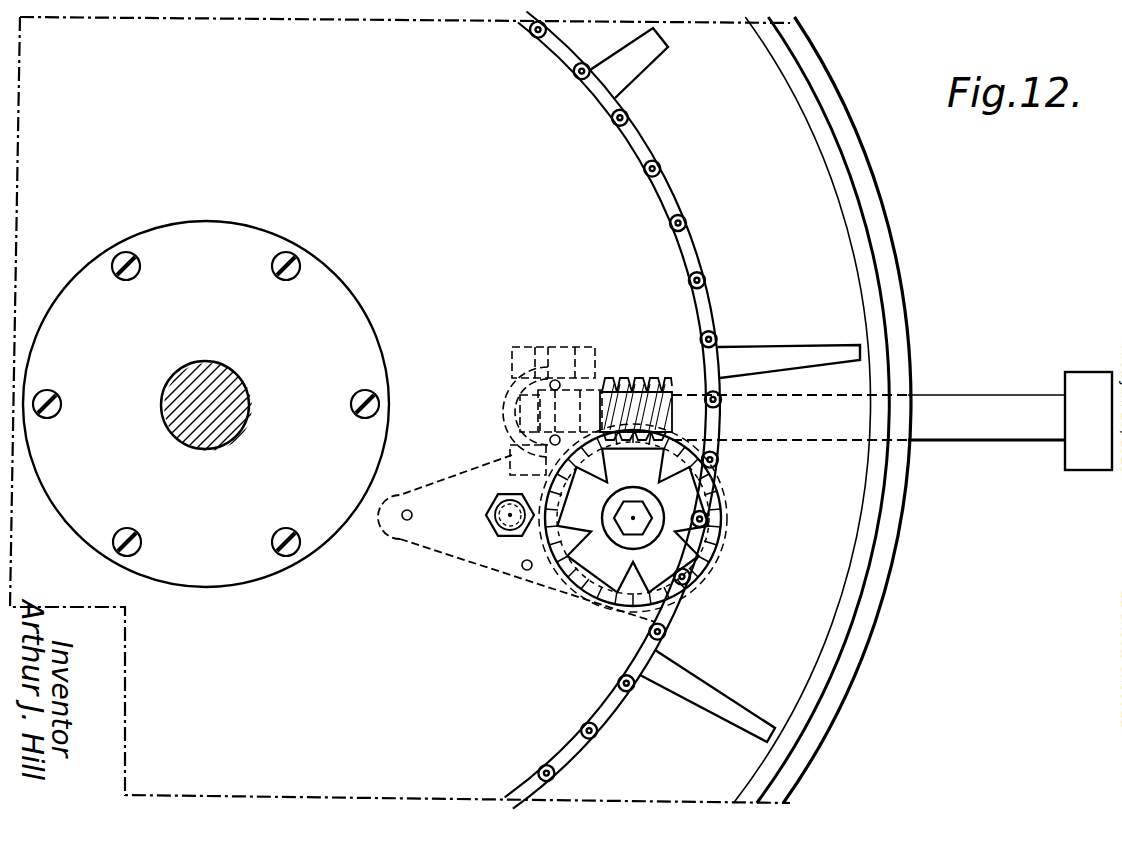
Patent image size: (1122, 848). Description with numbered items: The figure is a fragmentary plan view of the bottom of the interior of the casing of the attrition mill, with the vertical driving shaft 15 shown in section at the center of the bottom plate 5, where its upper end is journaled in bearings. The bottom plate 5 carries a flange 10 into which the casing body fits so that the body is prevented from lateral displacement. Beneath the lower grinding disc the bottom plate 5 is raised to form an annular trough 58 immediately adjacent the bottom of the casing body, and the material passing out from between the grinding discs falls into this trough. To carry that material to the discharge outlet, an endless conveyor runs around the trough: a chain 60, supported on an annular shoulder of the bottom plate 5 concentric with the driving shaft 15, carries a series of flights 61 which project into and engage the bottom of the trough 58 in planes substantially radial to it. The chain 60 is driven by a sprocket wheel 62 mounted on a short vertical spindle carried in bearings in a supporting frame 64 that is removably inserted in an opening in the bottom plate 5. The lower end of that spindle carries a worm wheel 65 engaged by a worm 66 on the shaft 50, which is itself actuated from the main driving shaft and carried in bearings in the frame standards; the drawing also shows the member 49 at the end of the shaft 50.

The bottom plate 5 is at (915, 284).
The flange 10 is at (895, 350).
The vertical shaft 15 is at (238, 419).
The motor box 49 is at (1087, 380).
The shaft 50 is at (999, 404).
The annular trough 58 is at (800, 187).
The chain 60 is at (638, 133).
The flights 61 is at (638, 58).
The sprocket wheel 62 is at (603, 545).
The supporting frame 64 is at (470, 563).
The worm wheel 65 is at (570, 563).
The worm 66 is at (628, 380).